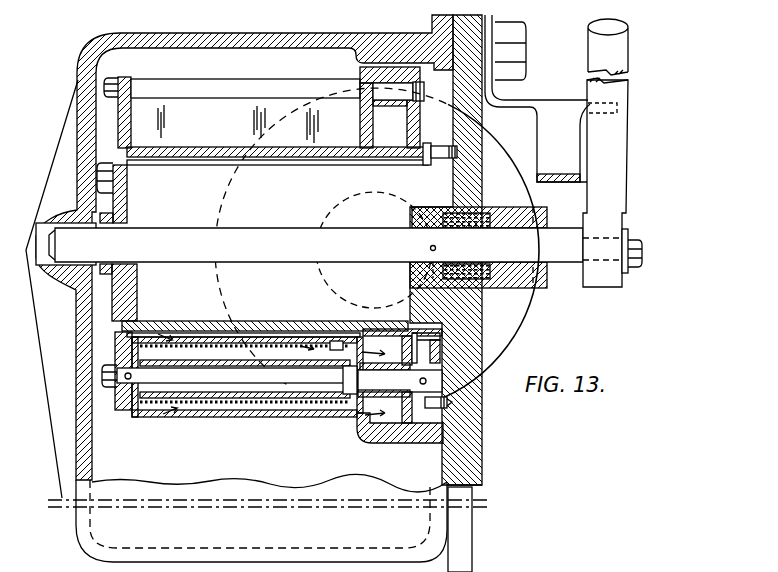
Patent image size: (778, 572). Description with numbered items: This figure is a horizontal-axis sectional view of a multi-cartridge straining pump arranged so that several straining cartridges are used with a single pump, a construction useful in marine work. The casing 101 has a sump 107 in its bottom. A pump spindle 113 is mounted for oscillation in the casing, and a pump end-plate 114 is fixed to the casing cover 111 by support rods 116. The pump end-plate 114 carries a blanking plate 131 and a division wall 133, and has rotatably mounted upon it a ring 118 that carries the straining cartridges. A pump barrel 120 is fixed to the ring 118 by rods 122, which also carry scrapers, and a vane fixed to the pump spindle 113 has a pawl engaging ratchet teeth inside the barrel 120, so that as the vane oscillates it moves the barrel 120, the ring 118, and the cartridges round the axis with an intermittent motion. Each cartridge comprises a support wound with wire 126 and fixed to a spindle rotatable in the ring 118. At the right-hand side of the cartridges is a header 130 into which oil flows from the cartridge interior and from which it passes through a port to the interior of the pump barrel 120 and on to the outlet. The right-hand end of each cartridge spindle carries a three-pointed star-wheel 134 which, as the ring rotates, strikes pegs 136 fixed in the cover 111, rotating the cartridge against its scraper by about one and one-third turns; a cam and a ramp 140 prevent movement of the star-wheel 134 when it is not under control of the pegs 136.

The casing 101 is at (88, 58).
The sump 107 is at (269, 519).
The casing cover 111 is at (463, 390).
The pump spindle 113 is at (290, 243).
The pump end-plate 114 is at (110, 268).
The support rods 116 is at (166, 180).
The ring 118 is at (118, 410).
The pump barrel 120 is at (219, 157).
The rods 122 is at (193, 90).
The wire 126 is at (256, 414).
The header 130 is at (378, 425).
The blanking plate 131 is at (138, 283).
The division wall 133 is at (292, 322).
The star-wheel 134 is at (440, 353).
The pegs 136 is at (433, 412).
The ramp 140 is at (460, 112).